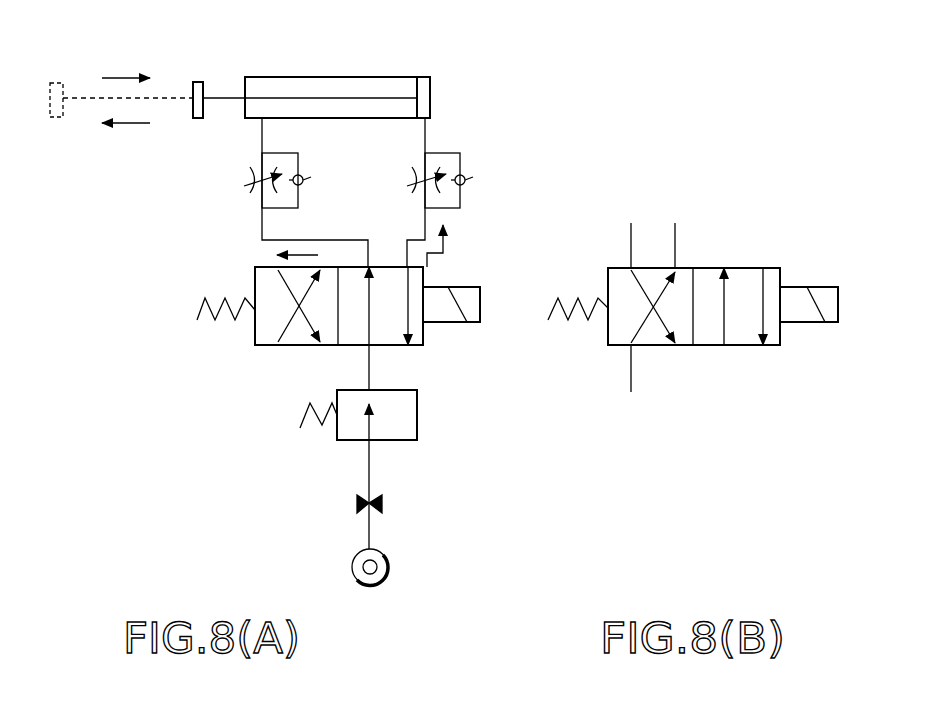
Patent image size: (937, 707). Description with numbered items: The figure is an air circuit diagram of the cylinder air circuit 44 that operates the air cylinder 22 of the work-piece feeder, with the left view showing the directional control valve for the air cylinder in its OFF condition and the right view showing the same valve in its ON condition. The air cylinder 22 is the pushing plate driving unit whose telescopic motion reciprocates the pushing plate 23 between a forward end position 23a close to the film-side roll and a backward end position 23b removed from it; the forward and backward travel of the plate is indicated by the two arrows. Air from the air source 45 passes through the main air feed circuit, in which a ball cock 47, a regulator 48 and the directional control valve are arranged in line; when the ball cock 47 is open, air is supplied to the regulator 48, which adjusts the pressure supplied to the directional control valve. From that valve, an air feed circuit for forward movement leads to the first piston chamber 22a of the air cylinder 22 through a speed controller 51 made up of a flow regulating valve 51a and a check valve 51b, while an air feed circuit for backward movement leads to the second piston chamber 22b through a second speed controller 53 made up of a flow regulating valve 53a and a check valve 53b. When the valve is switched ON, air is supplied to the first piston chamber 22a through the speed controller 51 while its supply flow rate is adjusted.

The air cylinder 22 is at (379, 59).
The first piston chamber 22a is at (433, 88).
The second piston chamber 22b is at (276, 88).
The pushing plate 23 is at (195, 118).
The forward end position 23a is at (60, 80).
The backward end position 23b is at (197, 82).
The cylinder air circuit 44 is at (542, 112).
The air source 45 is at (388, 565).
The ball cock 47 is at (383, 502).
The regulator 48 is at (417, 413).
The speed controller 51 is at (445, 156).
The flow regulating valve 51a is at (413, 173).
The check valve 51b is at (465, 167).
The speed controller 53 is at (269, 175).
The flow regulating valve 53a is at (252, 172).
The check valve 53b is at (305, 182).